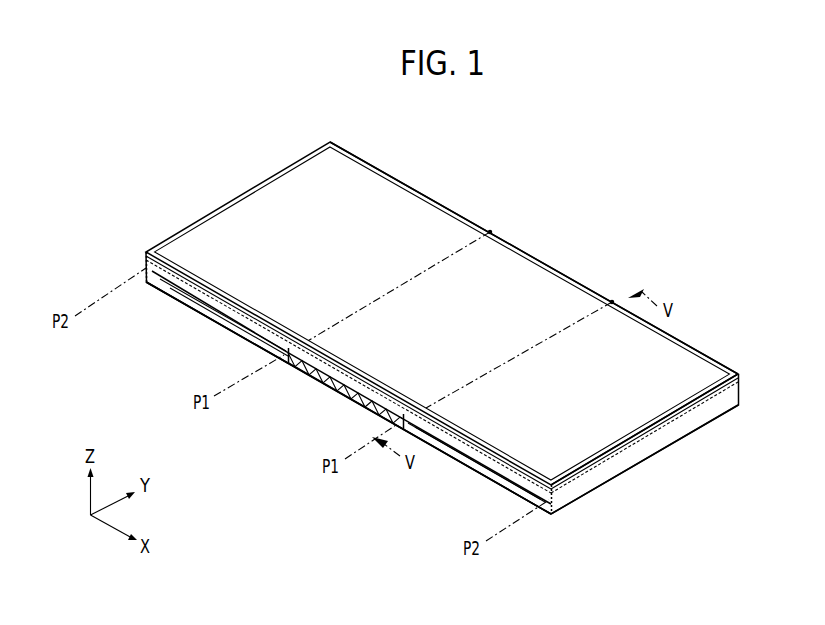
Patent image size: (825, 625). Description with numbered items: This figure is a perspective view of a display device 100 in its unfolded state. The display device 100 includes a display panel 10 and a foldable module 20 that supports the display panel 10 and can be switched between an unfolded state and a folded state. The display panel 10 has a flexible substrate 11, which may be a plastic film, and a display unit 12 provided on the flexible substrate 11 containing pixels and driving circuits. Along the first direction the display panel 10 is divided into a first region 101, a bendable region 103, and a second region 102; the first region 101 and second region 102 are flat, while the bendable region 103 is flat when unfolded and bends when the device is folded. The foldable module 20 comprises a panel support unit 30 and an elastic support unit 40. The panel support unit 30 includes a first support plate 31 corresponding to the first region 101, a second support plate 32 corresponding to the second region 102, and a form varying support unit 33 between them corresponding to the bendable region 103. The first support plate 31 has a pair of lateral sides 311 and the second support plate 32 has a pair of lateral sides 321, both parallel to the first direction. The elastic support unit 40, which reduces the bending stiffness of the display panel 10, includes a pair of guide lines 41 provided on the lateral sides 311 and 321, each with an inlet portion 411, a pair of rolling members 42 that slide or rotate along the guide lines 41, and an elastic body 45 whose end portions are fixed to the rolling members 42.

The display device 100 is at (465, 118).
The display panel 10 is at (712, 350).
The flexible substrate 11 is at (690, 416).
The display unit 12 is at (532, 260).
The foldable module 20 is at (648, 468).
The first region 101 is at (326, 246).
The second region 102 is at (581, 396).
The bendable region 103 is at (454, 322).
The panel support unit 30 is at (641, 557).
The first support plate 31 is at (140, 270).
The sides 311 is at (172, 300).
The second support plate 32 is at (592, 487).
The sides 321 is at (500, 475).
The form varying support unit 33 is at (310, 372).
The elastic support unit 40 is at (741, 557).
The guide lines 41 is at (450, 429).
The inlet portion 411 is at (262, 328).
The rolling members 42 is at (283, 372).
The elastic body 45 is at (345, 392).